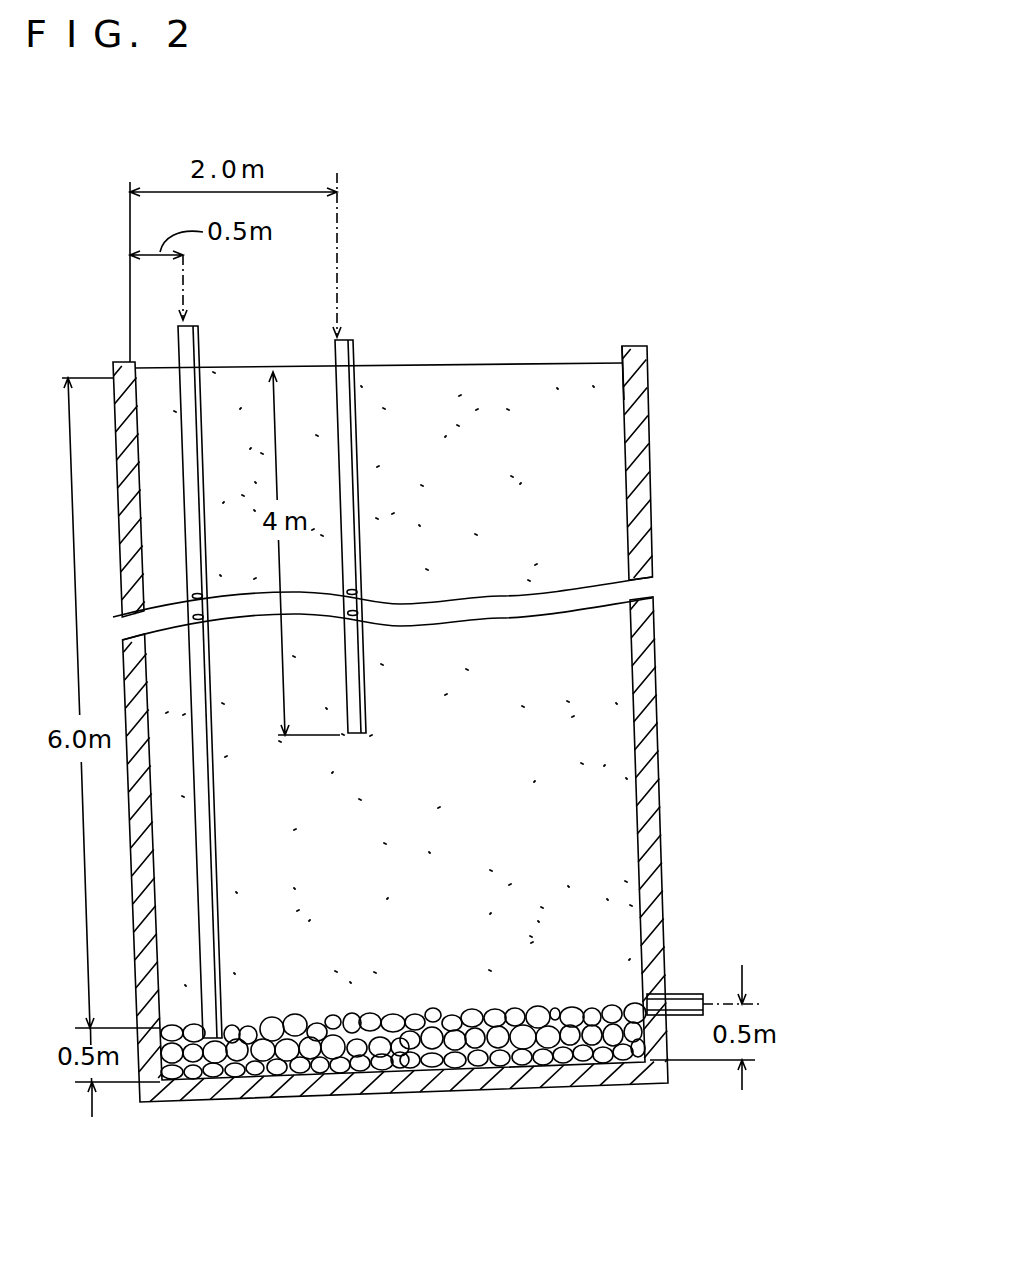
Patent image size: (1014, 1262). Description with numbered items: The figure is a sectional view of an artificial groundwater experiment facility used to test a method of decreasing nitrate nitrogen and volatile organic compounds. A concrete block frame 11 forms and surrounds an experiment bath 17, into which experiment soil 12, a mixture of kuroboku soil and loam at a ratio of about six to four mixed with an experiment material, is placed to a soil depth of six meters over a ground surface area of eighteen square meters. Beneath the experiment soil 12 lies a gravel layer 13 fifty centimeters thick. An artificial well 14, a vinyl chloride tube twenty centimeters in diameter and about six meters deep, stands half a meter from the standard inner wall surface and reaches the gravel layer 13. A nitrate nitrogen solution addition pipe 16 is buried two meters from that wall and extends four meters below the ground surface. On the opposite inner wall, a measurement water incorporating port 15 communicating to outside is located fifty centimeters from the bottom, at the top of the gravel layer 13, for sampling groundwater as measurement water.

The concrete block frame 11 is at (637, 412).
The experiment soil 12 is at (517, 380).
The gravel layer 13 is at (598, 1057).
The artificial well 14 is at (188, 350).
The measurement water incorporating port 15 is at (685, 998).
The nitrate nitrogen solution addition pipe 16 is at (340, 357).
The experiment bath 17 is at (623, 395).